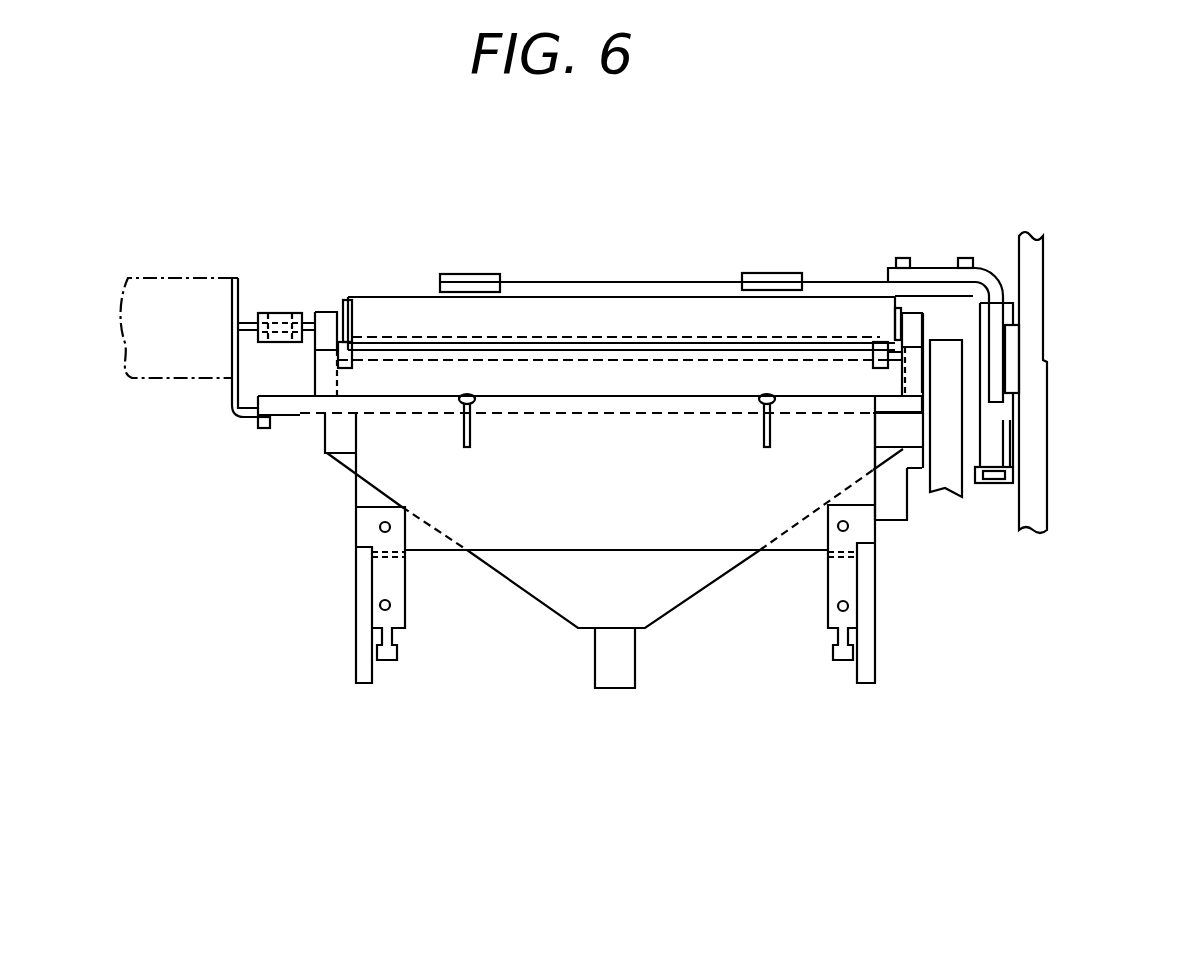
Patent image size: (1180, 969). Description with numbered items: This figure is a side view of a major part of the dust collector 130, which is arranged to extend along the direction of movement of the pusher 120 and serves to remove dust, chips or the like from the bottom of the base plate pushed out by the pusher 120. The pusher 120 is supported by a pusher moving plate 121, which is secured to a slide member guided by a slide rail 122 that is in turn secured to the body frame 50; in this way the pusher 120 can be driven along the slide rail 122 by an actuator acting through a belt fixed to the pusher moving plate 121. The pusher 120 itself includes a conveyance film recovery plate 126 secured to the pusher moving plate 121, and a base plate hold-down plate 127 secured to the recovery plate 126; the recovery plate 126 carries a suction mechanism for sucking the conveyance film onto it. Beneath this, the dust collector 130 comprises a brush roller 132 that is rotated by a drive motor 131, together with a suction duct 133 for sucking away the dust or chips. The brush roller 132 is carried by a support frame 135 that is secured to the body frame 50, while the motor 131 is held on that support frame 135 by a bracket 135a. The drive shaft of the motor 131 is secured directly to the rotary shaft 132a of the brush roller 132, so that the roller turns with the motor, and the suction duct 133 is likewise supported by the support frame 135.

The body frame 50 is at (1037, 478).
The pusher 120 is at (612, 288).
The pusher moving plate 121 is at (928, 272).
The slide rail 122 is at (1013, 345).
The conveyance film recovery plate 126 is at (683, 291).
The base plate hold-down plate 127 is at (470, 275).
The dust collector 130 is at (298, 415).
The drive motor 131 is at (203, 290).
The brush roller 132 is at (368, 298).
The rotary shaft 132a is at (310, 325).
The suction duct 133 is at (665, 603).
The support frame 135 is at (402, 402).
The bracket 135a is at (236, 400).